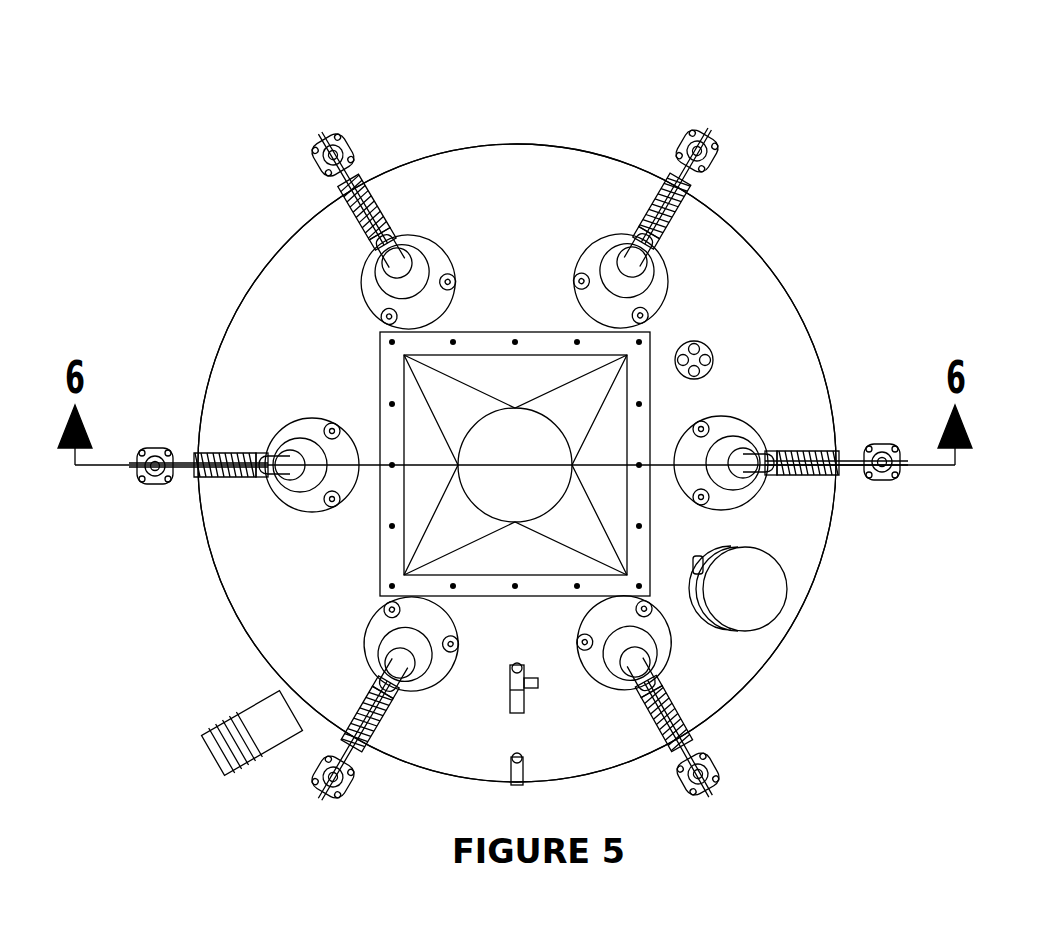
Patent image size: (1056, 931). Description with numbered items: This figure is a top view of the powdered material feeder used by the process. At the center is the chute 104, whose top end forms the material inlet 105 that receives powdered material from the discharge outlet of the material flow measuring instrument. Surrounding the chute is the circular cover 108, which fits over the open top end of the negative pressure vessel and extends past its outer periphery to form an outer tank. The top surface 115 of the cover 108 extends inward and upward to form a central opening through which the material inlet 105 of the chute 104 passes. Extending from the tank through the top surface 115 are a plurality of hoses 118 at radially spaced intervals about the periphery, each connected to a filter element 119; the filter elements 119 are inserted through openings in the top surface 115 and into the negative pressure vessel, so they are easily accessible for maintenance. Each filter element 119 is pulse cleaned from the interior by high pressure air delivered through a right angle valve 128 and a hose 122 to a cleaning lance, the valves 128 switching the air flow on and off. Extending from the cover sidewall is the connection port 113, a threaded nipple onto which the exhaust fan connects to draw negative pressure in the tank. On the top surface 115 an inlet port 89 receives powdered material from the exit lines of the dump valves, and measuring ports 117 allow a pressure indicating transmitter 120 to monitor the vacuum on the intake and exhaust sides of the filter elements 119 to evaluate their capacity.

The inlet port 89 is at (713, 357).
The chute 104 is at (477, 390).
The material inlet 105 is at (385, 345).
The cover 108 is at (313, 340).
The connection port 113 is at (267, 720).
The top surface 115 is at (495, 167).
The measuring ports 117 is at (512, 693).
The hoses 118 is at (380, 207).
The filter elements 119 is at (392, 283).
The pressure indicating transmitter 120 is at (793, 603).
The hose 122 is at (350, 205).
The right angle valves 128 is at (322, 148).